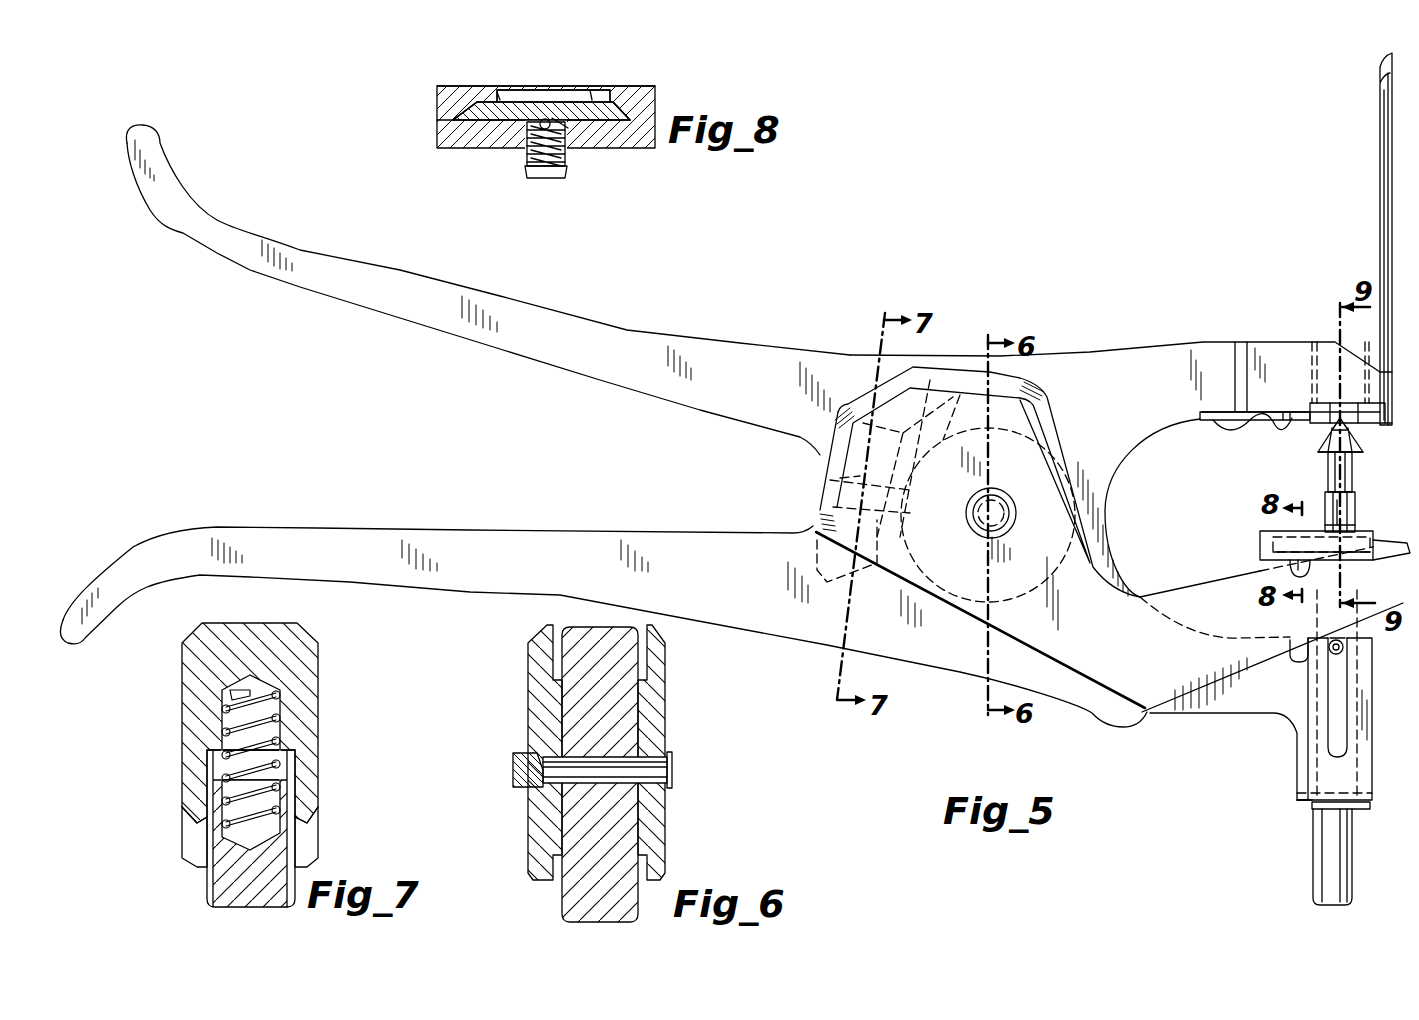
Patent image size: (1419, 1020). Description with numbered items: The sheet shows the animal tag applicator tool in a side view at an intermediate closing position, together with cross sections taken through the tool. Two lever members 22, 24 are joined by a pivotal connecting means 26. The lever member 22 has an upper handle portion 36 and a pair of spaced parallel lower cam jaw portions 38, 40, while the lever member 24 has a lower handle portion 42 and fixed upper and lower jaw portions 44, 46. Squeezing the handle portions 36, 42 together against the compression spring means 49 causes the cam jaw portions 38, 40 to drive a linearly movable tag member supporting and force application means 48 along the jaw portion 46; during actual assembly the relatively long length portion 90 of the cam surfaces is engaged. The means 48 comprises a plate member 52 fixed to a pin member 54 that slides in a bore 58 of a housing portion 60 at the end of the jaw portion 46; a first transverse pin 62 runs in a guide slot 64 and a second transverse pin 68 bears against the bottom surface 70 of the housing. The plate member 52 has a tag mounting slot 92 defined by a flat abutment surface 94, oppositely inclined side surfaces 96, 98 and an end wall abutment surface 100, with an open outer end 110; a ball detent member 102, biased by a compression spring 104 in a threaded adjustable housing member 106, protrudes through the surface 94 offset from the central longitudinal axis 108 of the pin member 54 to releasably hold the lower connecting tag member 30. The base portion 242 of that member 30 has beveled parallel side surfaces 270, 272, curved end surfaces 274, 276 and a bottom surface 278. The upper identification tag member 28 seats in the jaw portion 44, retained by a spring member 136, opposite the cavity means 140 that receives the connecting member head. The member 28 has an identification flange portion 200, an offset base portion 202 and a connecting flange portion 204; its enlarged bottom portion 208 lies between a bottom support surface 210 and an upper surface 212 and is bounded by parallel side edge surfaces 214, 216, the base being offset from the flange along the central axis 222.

In FIG. 5, the lever member 22 is at (850, 343).
In FIG. 7, the lever member 22 is at (313, 650).
In FIG. 5, the lever member 24 is at (940, 680).
In FIG. 6, the lever member 24 is at (617, 700).
In FIG. 7, the lever member 24 is at (220, 893).
In FIG. 6, the pivotal connecting means 26 is at (675, 769).
In FIG. 5, the upper identification tag member 28 is at (1372, 135).
In FIG. 5, the lower connecting tag member 30 is at (1360, 499).
In FIG. 5, the upper handle portion 36 is at (607, 318).
In FIG. 6, the lower cam jaw portion 38 is at (532, 822).
In FIG. 7, the lower cam jaw portion 38 is at (190, 793).
In FIG. 5, the lower cam jaw portion 40 is at (1118, 725).
In FIG. 6, the lower cam jaw portion 40 is at (660, 822).
In FIG. 7, the lower cam jaw portion 40 is at (318, 767).
In FIG. 5, the lower handle portion 42 is at (383, 528).
In FIG. 5, the upper jaw portion 44 is at (1160, 344).
In FIG. 5, the lower jaw portion 46 is at (1267, 717).
In FIG. 5, the tag member supporting and force application means 48 is at (1250, 540).
In FIG. 8, the tag member supporting and force application means 48 is at (645, 74).
In FIG. 5, the compression spring means 49 is at (840, 480).
In FIG. 7, the compression spring means 49 is at (273, 715).
In FIG. 8, the plate member 52 is at (652, 108).
In FIG. 5, the pin member 54 is at (1343, 860).
In FIG. 5, the bore 58 is at (1306, 792).
In FIG. 5, the housing portion 60 is at (1358, 772).
In FIG. 5, the first transverse pin 62 is at (1342, 652).
In FIG. 5, the guide slot 64 is at (1340, 728).
In FIG. 5, the second transverse pin 68 is at (1363, 809).
In FIG. 5, the bottom surface 70 is at (1307, 805).
In FIG. 5, the second relatively long length portion 90 is at (1372, 625).
In FIG. 8, the tag mounting slot 92 is at (540, 92).
In FIG. 8, the flat abutment surface 94 is at (513, 103).
In FIG. 8, the inclined side surface 96 is at (498, 92).
In FIG. 8, the inclined side surface 98 is at (590, 90).
In FIG. 5, the end wall abutment surface 100 is at (1275, 538).
In FIG. 8, the ball detent member 102 is at (566, 135).
In FIG. 8, the compression spring 104 is at (530, 166).
In FIG. 5, the threaded adjustable housing member 106 is at (1305, 580).
In FIG. 8, the threaded adjustable housing member 106 is at (540, 178).
In FIG. 5, the central longitudinal axis 108 is at (1355, 516).
In FIG. 5, the outer end 110 is at (1337, 508).
In FIG. 5, the spring member 136 is at (1240, 428).
In FIG. 5, the cavity means 140 is at (1332, 340).
In FIG. 5, the identification flange portion 200 is at (1378, 190).
In FIG. 5, the base portion 202 is at (1308, 403).
In FIG. 5, the connecting flange portion 204 is at (1390, 345).
In FIG. 5, the enlarged bottom portion 208 is at (1312, 423).
In FIG. 5, the bottom support surface 210 is at (1366, 433).
In FIG. 5, the upper surface 212 is at (1296, 410).
In FIG. 5, the side edge surface 214 is at (1290, 418).
In FIG. 5, the side edge surface 216 is at (1370, 424).
In FIG. 5, the central axis 222 is at (1368, 432).
In FIG. 5, the base portion 242 is at (1336, 566).
In FIG. 8, the base portion 242 is at (570, 130).
In FIG. 8, the side surface 270 is at (492, 98).
In FIG. 8, the side surface 272 is at (625, 100).
In FIG. 5, the connecting end surface 274 is at (1262, 553).
In FIG. 5, the connecting end surface 276 is at (1400, 553).
In FIG. 8, the bottom surface 278 is at (498, 128).